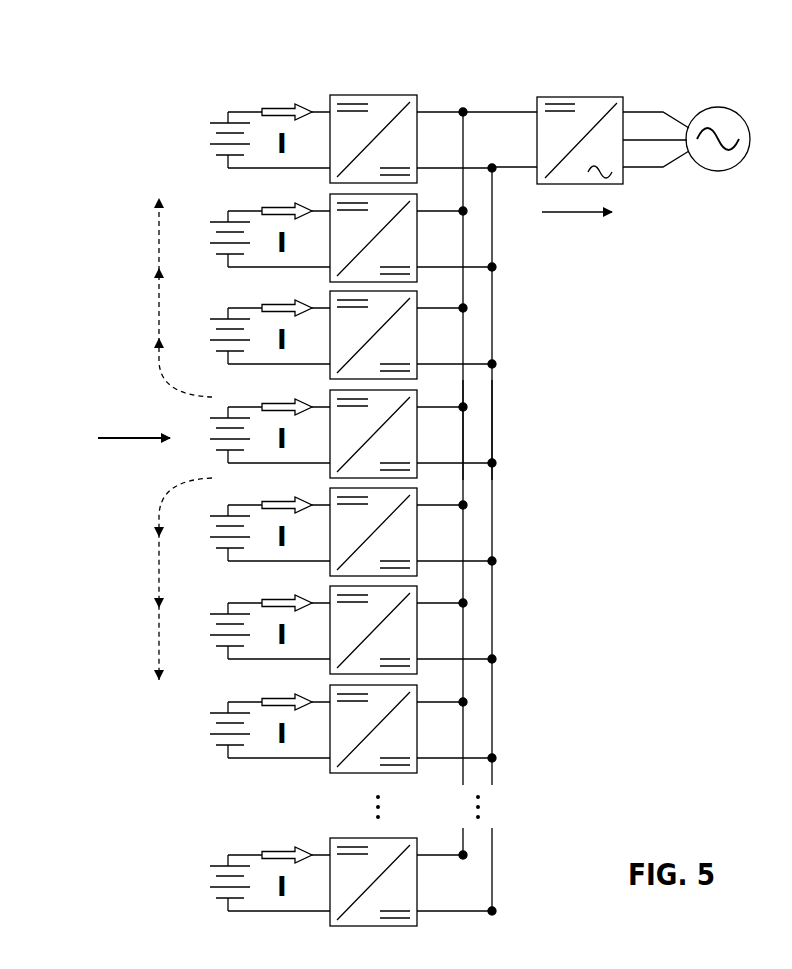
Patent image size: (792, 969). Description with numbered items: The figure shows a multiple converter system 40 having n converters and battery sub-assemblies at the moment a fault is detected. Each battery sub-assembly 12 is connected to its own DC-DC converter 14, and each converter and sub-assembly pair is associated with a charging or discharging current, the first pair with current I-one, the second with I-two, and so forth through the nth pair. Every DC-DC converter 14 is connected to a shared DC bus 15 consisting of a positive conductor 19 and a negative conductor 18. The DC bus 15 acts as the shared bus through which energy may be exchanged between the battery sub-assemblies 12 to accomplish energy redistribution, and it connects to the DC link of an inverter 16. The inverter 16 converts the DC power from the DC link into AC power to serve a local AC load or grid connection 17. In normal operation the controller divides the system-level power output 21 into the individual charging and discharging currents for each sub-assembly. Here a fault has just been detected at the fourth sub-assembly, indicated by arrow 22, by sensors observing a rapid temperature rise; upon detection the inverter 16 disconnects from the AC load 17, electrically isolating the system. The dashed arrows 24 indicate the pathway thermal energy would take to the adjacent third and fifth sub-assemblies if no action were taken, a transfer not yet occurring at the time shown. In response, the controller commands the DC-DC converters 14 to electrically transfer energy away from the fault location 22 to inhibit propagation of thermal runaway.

The multiple converter system 40 is at (300, 56).
The battery sub-assembly 12 is at (206, 145).
The DC-DC converter 14 is at (383, 124).
The positive conductor 19 is at (505, 112).
The inverter 16 is at (590, 97).
The AC load or grid connection 17 is at (718, 106).
The system-level power output 21 is at (590, 214).
The negative conductor 18 is at (492, 215).
The DC bus 15 is at (512, 391).
The arrows indicating thermal energy transfer 24 is at (145, 303).
The fault location arrow 22 is at (140, 440).